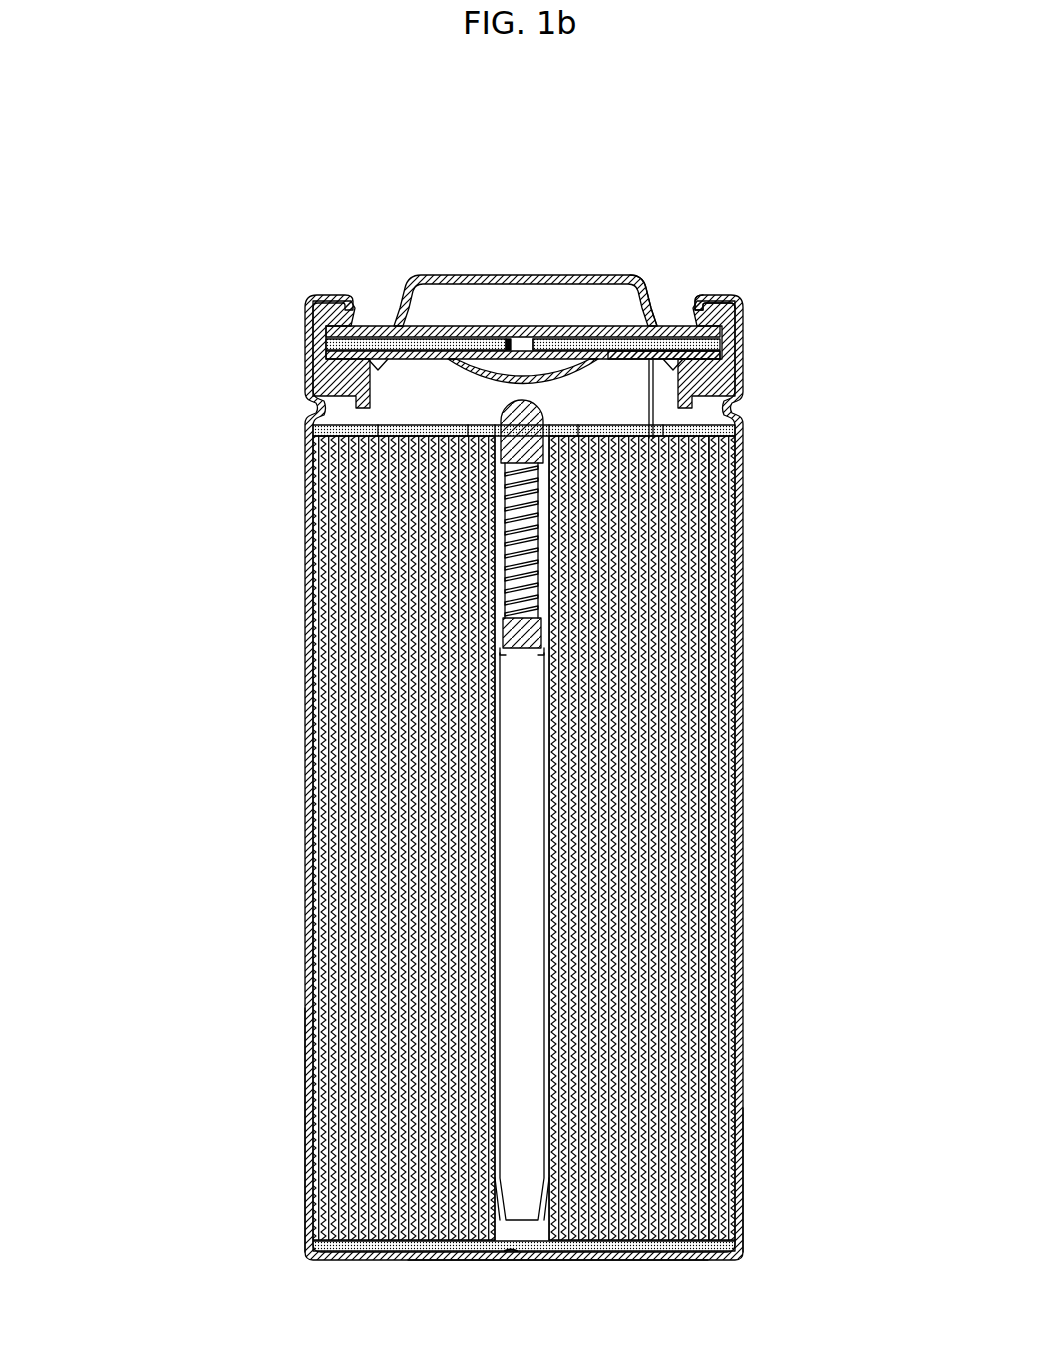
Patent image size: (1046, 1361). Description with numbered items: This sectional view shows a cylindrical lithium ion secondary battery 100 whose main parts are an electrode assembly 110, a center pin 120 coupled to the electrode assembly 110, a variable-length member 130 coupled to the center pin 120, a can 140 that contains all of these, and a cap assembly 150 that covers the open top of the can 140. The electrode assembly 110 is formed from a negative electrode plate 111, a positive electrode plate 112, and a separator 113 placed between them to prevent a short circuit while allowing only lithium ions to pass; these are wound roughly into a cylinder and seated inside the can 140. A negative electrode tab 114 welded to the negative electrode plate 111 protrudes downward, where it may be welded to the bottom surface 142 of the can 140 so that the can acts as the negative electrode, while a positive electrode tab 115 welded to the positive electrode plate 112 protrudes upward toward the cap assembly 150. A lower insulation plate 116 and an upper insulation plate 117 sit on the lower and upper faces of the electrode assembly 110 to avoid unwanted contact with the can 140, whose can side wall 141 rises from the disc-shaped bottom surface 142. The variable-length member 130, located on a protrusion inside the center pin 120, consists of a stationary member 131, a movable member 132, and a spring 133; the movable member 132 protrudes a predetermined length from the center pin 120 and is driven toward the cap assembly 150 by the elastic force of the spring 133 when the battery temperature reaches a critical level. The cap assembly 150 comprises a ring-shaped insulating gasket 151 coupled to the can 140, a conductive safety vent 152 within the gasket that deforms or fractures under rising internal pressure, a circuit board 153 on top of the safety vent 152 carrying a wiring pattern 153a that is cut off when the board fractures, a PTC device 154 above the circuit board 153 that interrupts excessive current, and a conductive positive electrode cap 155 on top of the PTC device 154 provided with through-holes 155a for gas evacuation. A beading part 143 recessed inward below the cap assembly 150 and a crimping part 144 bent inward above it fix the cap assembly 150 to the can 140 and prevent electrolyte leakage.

The cylindrical lithium ion secondary battery 100 is at (782, 172).
The electrode assembly 110 is at (728, 792).
The negative electrode plate 111 is at (710, 505).
The positive electrode plate 112 is at (700, 588).
The separator 113 is at (705, 547).
The negative electrode tab 114 is at (499, 1252).
The positive electrode tab 115 is at (648, 378).
The lower insulation plate 116 is at (728, 1238).
The upper insulation plate 117 is at (722, 420).
The center pin 120 is at (545, 910).
The variable-length member 130 is at (178, 452).
The stationary member 131 is at (495, 627).
The movable member 132 is at (493, 435).
The spring 133 is at (500, 512).
The can 140 is at (738, 1065).
The can side wall 141 is at (737, 1182).
The bottom surface 142 is at (690, 1256).
The beading part 143 is at (300, 396).
The crimping part 144 is at (320, 290).
The cap assembly 150 is at (478, 266).
The insulating gasket 151 is at (718, 287).
The safety vent 152 is at (316, 347).
The circuit board 153 is at (318, 326).
The wiring pattern 153a is at (548, 331).
The PTC device 154 is at (662, 312).
The positive electrode cap 155 is at (366, 318).
The through-holes 155a is at (635, 300).